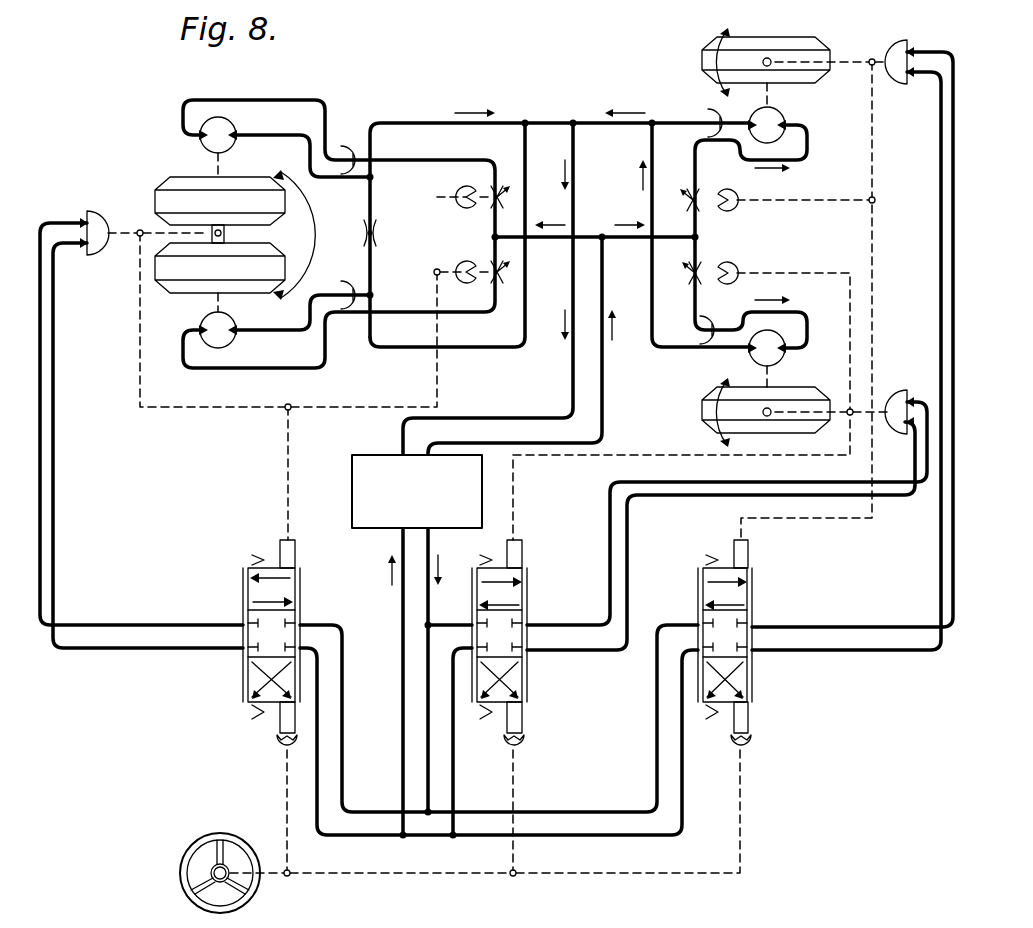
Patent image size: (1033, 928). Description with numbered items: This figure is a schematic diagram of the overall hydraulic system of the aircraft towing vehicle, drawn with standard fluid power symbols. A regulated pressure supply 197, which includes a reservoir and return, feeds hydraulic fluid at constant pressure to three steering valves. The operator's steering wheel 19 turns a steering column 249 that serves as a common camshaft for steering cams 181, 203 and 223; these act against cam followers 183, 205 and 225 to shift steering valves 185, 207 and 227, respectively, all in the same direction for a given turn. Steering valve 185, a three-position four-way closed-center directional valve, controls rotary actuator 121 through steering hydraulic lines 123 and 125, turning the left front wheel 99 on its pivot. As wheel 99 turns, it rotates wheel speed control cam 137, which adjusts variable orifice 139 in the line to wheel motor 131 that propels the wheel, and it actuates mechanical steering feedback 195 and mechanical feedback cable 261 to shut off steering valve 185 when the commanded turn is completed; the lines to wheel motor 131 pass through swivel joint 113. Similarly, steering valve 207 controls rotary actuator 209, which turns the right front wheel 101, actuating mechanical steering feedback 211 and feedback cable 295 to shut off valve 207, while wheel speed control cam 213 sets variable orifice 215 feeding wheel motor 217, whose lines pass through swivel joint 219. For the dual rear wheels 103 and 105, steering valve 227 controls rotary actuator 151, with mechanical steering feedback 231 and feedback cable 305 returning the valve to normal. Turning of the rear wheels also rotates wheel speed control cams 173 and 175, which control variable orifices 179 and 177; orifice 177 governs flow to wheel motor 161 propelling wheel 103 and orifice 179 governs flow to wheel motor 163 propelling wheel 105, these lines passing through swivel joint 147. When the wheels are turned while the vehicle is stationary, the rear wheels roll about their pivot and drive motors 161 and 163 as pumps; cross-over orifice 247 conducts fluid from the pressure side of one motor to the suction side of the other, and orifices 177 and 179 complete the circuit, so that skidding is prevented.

The steering wheel 19 is at (205, 843).
The left front wheel 99 is at (812, 40).
The right front wheel 101 is at (782, 432).
The rear wheel 103 is at (160, 191).
The rear wheel 105 is at (180, 291).
The swivel joint 113 is at (708, 118).
The rotary actuator 121 is at (903, 40).
The steering hydraulic line 123 is at (850, 624).
The steering hydraulic line 125 is at (848, 652).
The wheel motor 131 is at (785, 122).
The wheel speed control cam 137 is at (728, 208).
The variable orifice 139 is at (680, 203).
The swivel joint 147 is at (345, 148).
The rotary actuator 151 is at (92, 210).
The wheel motor 161 is at (236, 130).
The wheel motor 163 is at (236, 340).
The wheel speed control cam 173 is at (462, 280).
The wheel speed control cam 175 is at (460, 194).
The variable orifice 177 is at (497, 185).
The variable orifice 179 is at (497, 290).
The steering cam 181 is at (751, 741).
The cam follower 183 is at (749, 712).
The steering valve 185 is at (748, 605).
The mechanical steering feedback 195 is at (749, 560).
The regulated pressure supply 197 is at (360, 456).
The steering cam 203 is at (526, 740).
The cam follower 205 is at (524, 712).
The steering valve 207 is at (524, 604).
The rotary actuator 209 is at (903, 392).
The mechanical steering feedback 211 is at (524, 560).
The wheel speed control cam 213 is at (732, 268).
The variable orifice 215 is at (682, 276).
The wheel motor 217 is at (780, 360).
The swivel joint 219 is at (700, 345).
The steering cam 223 is at (278, 742).
The cam follower 225 is at (256, 712).
The steering valve 227 is at (298, 604).
The mechanical steering feedback 231 is at (297, 560).
The cross-over orifice 247 is at (376, 230).
The steering column 249 is at (425, 874).
The mechanical feedback cable 261 is at (872, 218).
The mechanical feedback cable 295 is at (655, 455).
The mechanical feedback cable 305 is at (228, 410).